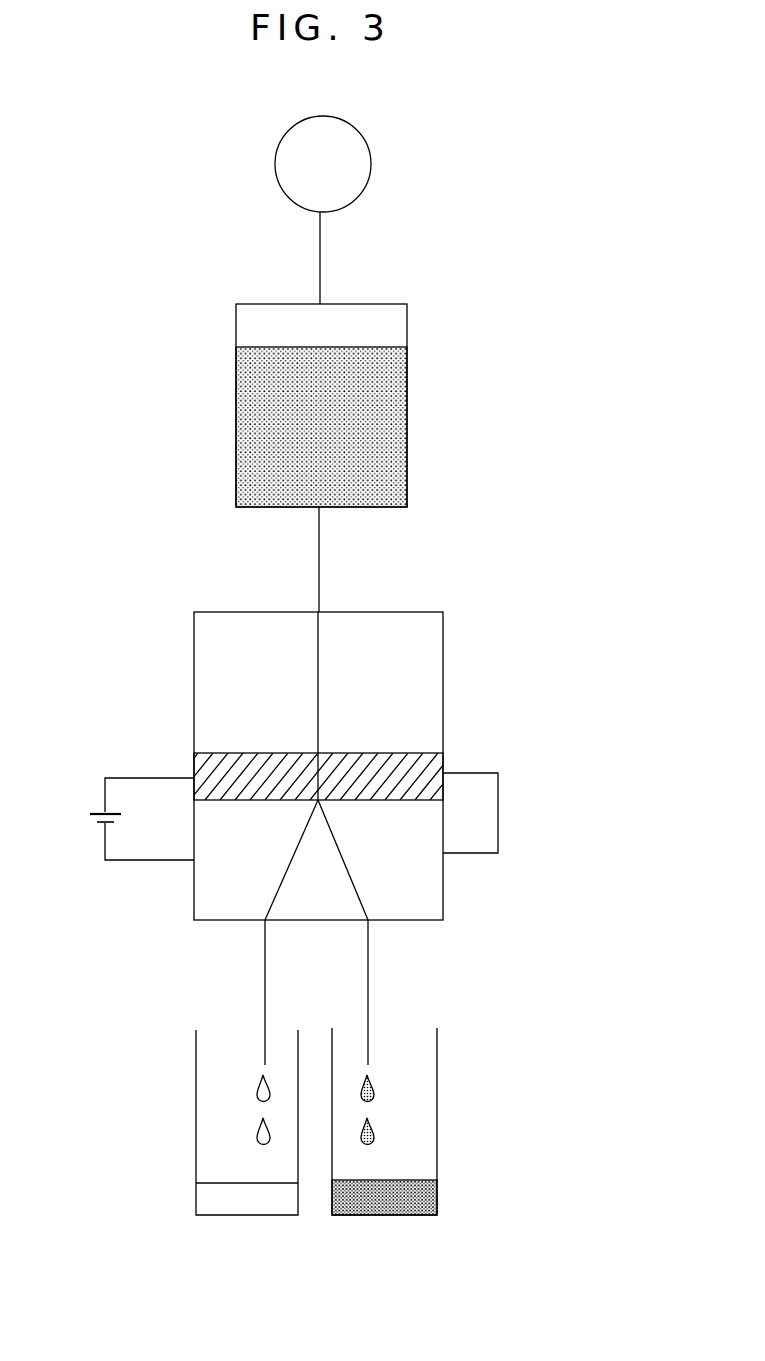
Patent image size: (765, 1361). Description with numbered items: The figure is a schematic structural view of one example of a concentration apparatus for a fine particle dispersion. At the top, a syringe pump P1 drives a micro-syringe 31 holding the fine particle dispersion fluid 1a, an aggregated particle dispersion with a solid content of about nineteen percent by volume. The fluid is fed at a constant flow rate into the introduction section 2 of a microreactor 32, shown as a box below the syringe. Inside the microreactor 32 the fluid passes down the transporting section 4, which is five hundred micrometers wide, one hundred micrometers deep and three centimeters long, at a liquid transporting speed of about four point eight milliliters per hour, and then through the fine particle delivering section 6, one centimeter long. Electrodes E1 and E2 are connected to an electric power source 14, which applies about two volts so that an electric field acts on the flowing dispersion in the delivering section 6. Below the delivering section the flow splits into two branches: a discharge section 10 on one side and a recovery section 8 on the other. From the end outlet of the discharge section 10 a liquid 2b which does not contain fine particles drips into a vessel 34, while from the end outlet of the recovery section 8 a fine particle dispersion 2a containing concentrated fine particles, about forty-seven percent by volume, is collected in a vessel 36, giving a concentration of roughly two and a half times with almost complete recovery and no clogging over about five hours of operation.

The syringe pump P1 is at (371, 163).
The micro-syringe 31 is at (407, 322).
The fine particle dispersion fluid 1a is at (407, 412).
The introduction section 2 is at (317, 611).
The microreactor 32 is at (443, 630).
The transporting section 4 is at (318, 680).
The fine particle delivering section 6 is at (320, 765).
The electrode E1 is at (377, 820).
The electrode E2 is at (242, 824).
The discharge section 10 is at (278, 885).
The recovery section 8 is at (348, 870).
The electric power source 14 is at (80, 818).
The liquid which does not contain fine particles 2b is at (246, 1032).
The fine particle dispersion containing concentrated fine particles 2a is at (385, 1032).
The vessel 34 is at (255, 1215).
The vessel 36 is at (382, 1215).